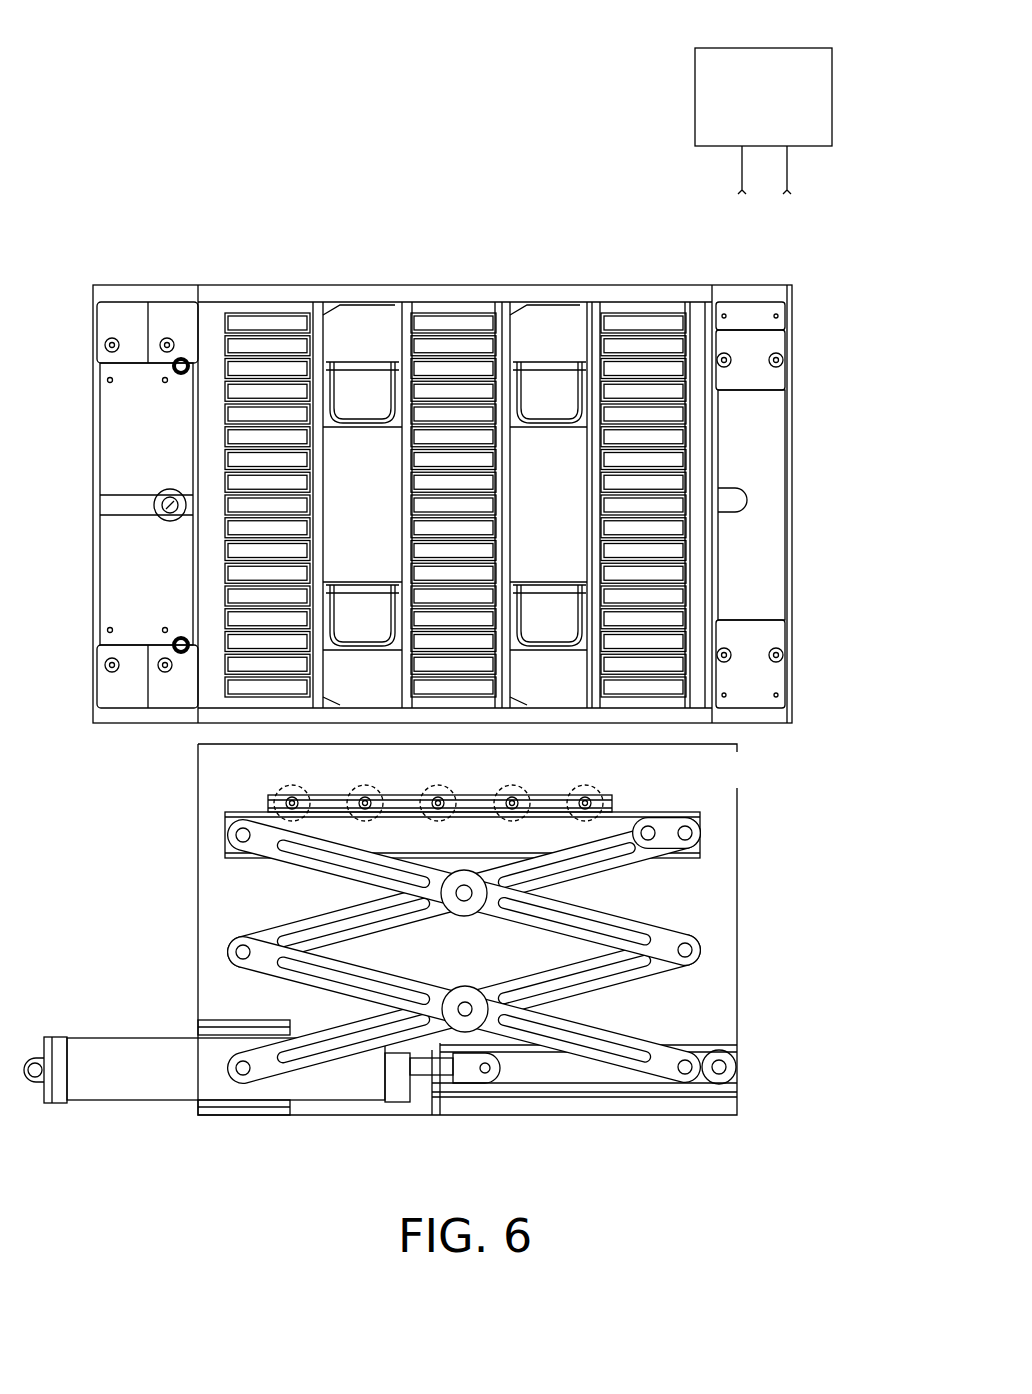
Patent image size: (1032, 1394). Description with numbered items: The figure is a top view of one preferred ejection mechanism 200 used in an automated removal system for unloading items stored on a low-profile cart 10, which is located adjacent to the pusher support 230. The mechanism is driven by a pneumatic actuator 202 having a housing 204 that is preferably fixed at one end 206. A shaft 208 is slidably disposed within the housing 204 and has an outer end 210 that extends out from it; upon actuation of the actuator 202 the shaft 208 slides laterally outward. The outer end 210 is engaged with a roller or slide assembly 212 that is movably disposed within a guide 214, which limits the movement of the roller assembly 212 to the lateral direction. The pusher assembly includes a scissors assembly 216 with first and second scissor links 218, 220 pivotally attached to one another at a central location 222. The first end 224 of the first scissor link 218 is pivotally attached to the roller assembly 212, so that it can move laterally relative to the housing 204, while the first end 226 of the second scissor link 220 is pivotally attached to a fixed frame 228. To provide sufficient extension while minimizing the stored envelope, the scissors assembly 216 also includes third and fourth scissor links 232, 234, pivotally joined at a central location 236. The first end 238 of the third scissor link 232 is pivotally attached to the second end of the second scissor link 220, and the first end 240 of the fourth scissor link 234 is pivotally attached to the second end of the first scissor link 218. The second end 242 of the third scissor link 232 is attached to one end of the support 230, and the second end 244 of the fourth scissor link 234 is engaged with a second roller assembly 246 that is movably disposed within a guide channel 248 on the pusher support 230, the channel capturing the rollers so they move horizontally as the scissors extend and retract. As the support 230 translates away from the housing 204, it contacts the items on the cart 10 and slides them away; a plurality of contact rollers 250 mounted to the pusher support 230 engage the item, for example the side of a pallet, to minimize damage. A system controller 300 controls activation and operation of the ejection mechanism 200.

The cart 10 is at (748, 293).
The system controller 300 is at (670, 75).
The ejection mechanism 200 is at (753, 858).
The pneumatic actuator 202 is at (120, 1052).
The housing 204 is at (125, 1086).
The end 206 is at (36, 1085).
The shaft 208 is at (432, 1078).
The outer end 210 is at (486, 1074).
The roller assembly 212 is at (726, 1066).
The guide 214 is at (722, 1052).
The scissors assembly 216 is at (692, 920).
The first scissor link 218 is at (598, 1032).
The second scissor link 220 is at (335, 1027).
The central location 222 is at (466, 1003).
The first end of the first scissor link 224 is at (693, 1050).
The first end of the second scissor link 226 is at (250, 1086).
The fixed frame 228 is at (292, 1105).
The pusher support 230 is at (270, 808).
The third scissor link 232 is at (632, 917).
The fourth scissor link 234 is at (290, 922).
The central location 236 is at (460, 898).
The first end of the third scissor link 238 is at (690, 950).
The first end of the fourth scissor link 240 is at (238, 951).
The second end of the third scissor link 242 is at (238, 834).
The second end of the fourth scissor link 244 is at (690, 829).
The second roller assembly 246 is at (620, 818).
The guide channel 248 is at (470, 832).
The contact rollers 250 is at (360, 798).